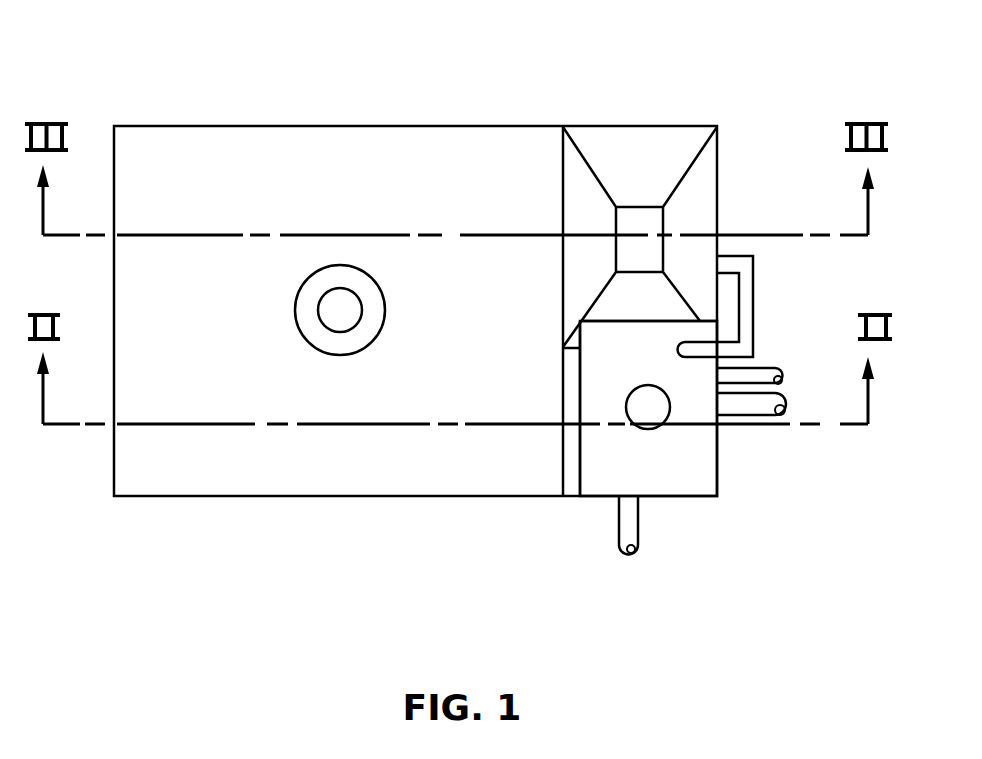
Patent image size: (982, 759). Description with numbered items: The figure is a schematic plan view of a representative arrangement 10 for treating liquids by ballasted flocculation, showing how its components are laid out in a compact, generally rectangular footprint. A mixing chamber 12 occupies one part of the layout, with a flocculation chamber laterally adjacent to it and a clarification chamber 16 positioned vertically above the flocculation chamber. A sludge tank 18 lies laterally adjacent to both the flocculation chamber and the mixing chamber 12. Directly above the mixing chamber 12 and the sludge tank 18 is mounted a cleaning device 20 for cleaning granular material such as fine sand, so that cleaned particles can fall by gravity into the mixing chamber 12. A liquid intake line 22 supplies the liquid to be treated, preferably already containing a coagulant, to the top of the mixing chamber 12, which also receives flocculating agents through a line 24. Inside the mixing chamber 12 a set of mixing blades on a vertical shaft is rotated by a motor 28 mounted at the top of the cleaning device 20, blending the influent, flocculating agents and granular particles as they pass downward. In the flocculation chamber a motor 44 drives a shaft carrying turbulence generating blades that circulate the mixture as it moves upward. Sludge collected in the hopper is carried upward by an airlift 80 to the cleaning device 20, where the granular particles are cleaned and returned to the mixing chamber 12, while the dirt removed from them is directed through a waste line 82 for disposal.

The arrangement for treatment of liquids 10 is at (738, 82).
The mixing chamber 12 is at (566, 500).
The clarification chamber 16 is at (193, 143).
The sludge tank 18 is at (626, 143).
The cleaning device 20 is at (671, 476).
The liquid intake line 22 is at (782, 398).
The line 24 is at (762, 370).
The motor 28 is at (650, 412).
The motor 44 is at (340, 310).
The airlift 80 is at (745, 273).
The waste line 82 is at (628, 545).